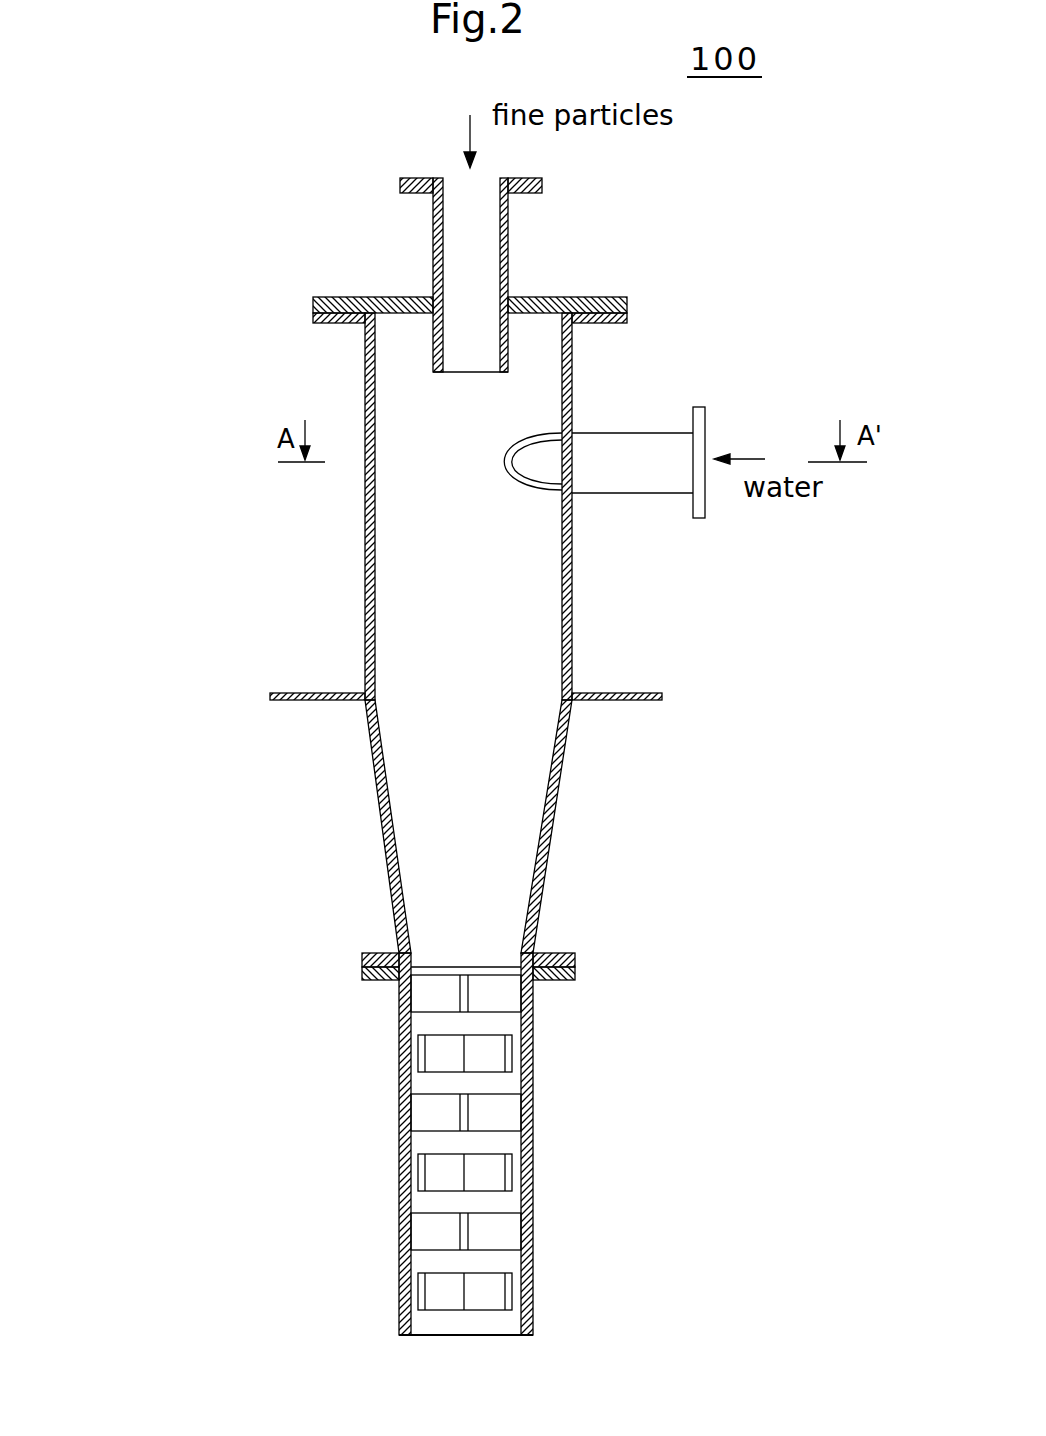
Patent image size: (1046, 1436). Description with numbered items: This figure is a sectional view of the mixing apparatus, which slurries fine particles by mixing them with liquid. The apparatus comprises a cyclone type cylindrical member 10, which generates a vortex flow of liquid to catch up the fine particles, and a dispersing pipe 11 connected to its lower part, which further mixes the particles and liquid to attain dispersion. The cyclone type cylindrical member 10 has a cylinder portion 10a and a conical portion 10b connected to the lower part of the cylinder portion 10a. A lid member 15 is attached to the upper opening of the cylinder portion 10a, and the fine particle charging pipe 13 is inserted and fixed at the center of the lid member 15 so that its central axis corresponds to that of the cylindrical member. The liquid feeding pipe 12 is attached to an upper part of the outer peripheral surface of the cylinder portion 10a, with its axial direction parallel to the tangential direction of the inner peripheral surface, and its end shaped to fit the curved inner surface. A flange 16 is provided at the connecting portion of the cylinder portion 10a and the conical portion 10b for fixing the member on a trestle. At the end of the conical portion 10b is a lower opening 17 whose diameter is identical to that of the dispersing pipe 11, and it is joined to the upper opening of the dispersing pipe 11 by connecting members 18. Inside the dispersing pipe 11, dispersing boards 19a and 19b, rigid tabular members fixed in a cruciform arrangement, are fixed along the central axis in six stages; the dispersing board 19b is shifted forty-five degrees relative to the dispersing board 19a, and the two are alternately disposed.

The cyclone type cylindrical member 10 is at (306, 641).
The cylinder portion 10a is at (258, 313).
The conical portion 10b is at (367, 835).
The dispersing pipe 11 is at (433, 1151).
The liquid feeding pipe 12 is at (647, 483).
The fine particle charging pipe 13 is at (508, 245).
The lid member 15 is at (622, 297).
The flange 16 is at (633, 702).
The lower opening 17 is at (455, 953).
The connecting members 18 is at (573, 963).
The dispersing board 19a is at (506, 993).
The dispersing board 19b is at (508, 1060).